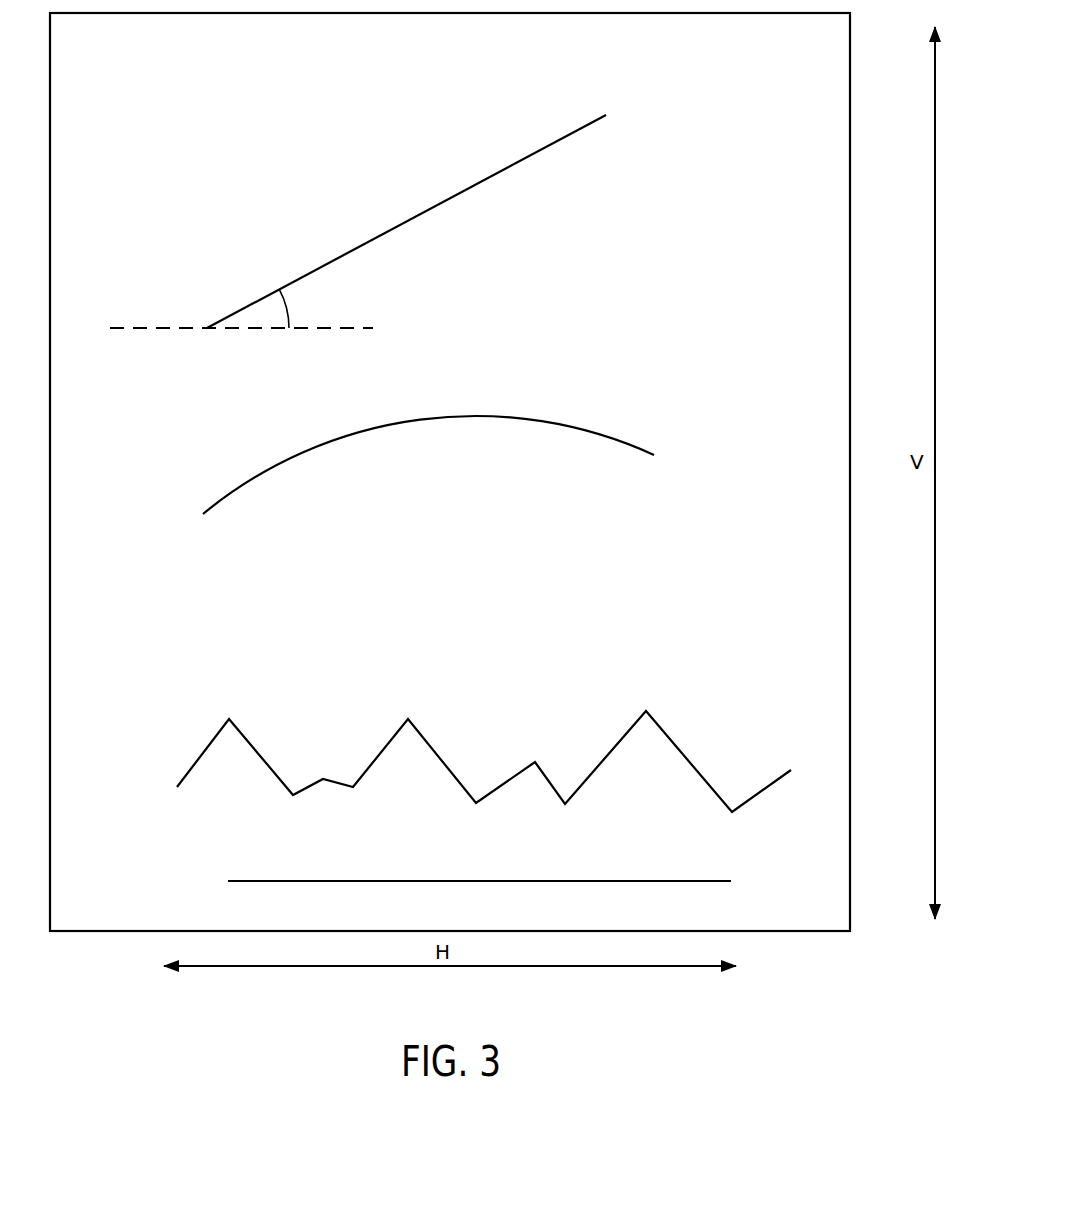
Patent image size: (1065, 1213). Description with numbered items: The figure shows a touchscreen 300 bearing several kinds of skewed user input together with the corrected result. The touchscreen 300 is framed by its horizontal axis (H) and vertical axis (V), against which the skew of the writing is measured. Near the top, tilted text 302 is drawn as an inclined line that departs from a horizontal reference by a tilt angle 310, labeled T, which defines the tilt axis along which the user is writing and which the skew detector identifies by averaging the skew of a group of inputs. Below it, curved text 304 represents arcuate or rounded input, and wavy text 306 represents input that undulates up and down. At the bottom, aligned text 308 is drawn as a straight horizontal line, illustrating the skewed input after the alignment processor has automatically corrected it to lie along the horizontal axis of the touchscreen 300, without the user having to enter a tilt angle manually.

The touchscreen 300 is at (50, 908).
The tilted text 302 is at (321, 233).
The curved text 304 is at (510, 398).
The wavy text 306 is at (425, 693).
The aligned text 308 is at (237, 862).
The tilt angle 310 is at (277, 313).